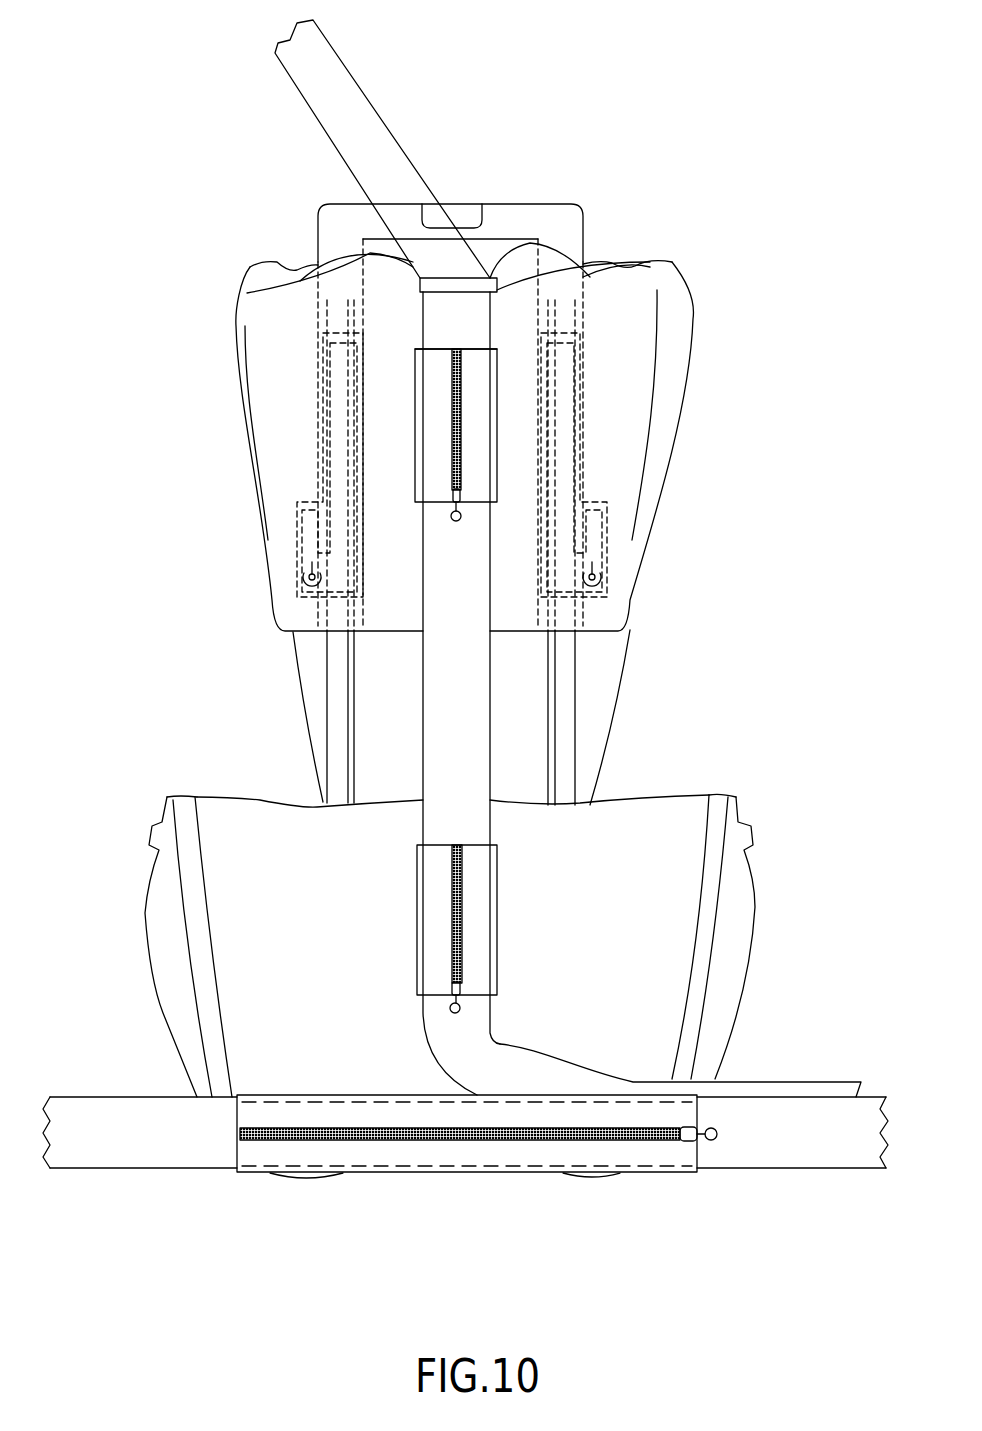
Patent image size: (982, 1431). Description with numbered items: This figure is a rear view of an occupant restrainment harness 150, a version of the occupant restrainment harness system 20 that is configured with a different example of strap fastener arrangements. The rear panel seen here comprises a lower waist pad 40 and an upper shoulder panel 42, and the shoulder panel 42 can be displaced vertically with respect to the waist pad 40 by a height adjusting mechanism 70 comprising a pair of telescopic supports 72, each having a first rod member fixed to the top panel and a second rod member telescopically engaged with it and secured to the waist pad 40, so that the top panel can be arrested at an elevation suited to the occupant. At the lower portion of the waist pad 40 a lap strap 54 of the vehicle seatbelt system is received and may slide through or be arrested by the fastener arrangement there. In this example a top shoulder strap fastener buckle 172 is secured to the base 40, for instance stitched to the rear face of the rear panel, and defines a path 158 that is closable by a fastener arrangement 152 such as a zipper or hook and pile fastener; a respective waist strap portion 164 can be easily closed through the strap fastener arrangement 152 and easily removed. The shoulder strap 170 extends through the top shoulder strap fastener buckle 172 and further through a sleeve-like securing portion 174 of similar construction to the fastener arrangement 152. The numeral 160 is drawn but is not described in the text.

The occupant restrainment harness system 20 is at (203, 188).
The waist pad 40 is at (250, 910).
The shoulder panel 42 is at (276, 347).
The lap strap 54 is at (92, 1145).
The height adjusting mechanism 70 is at (576, 545).
The telescopic supports 72 is at (340, 710).
The occupant restrainment harness 150 is at (714, 250).
The fastener arrangement 152 is at (570, 1105).
The path 158 is at (425, 322).
The sleeve 160 is at (497, 360).
The waist strap portion 164 is at (838, 1133).
The shoulder strap 170 is at (358, 123).
The top shoulder strap fastener buckle 172 is at (457, 278).
The sleeve-like securing portion 174 is at (527, 1228).